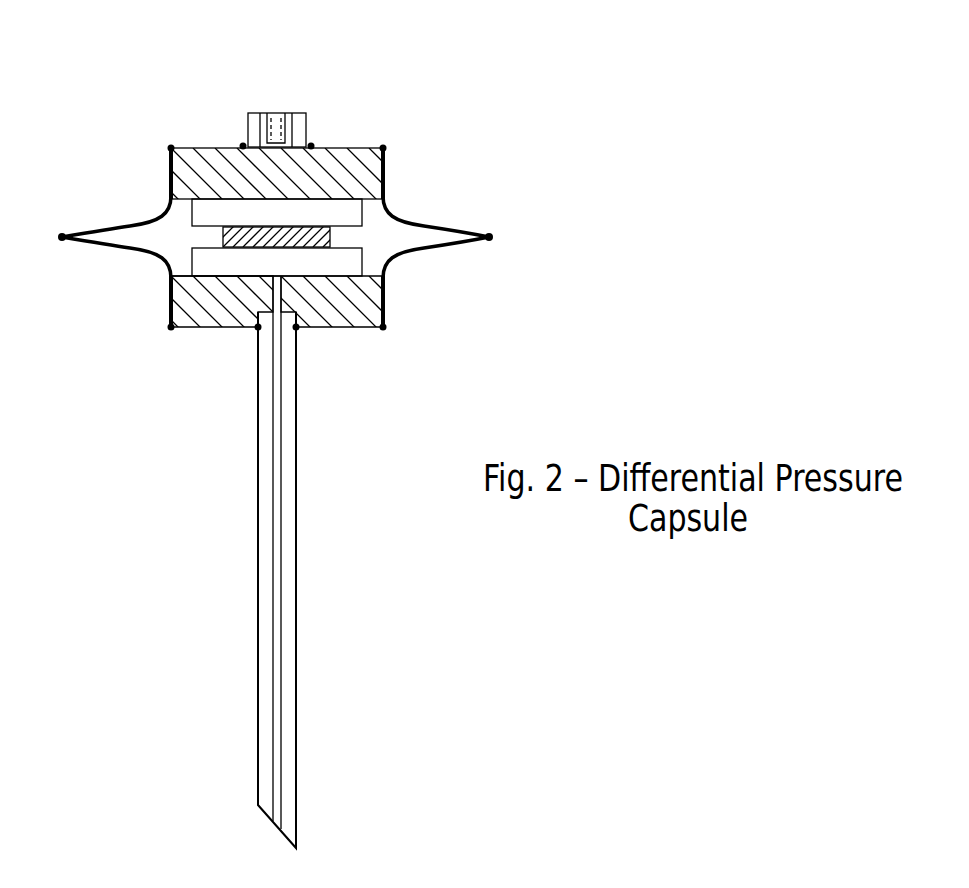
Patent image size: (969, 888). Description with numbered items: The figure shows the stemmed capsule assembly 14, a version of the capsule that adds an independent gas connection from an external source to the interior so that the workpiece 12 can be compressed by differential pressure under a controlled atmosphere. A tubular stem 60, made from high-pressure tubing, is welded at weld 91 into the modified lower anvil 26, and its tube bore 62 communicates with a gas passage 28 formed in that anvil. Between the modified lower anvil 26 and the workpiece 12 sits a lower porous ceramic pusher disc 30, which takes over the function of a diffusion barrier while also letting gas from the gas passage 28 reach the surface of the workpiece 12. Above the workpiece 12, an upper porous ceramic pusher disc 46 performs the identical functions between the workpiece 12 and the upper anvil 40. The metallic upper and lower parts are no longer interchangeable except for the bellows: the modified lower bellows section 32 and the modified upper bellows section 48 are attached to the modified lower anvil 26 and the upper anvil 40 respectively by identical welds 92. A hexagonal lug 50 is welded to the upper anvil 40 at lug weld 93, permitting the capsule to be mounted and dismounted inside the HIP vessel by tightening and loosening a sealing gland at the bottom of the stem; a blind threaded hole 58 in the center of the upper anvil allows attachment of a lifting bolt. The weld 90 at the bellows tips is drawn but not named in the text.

The stemmed capsule assembly 14 is at (138, 196).
The workpiece 12 is at (307, 240).
The modified lower anvil 26 is at (345, 312).
The gas passage 28 is at (283, 285).
The lower porous ceramic pusher disc 30 is at (337, 263).
The modified lower bellows section 32 is at (437, 253).
The upper anvil 40 is at (320, 177).
The upper porous ceramic pusher disc 46 is at (340, 208).
The modified upper bellows section 48 is at (415, 213).
The hexagonal lug 50 is at (252, 113).
The blind threaded hole 58 is at (275, 125).
The tubular stem 60 is at (285, 522).
The tube bore 62 is at (275, 597).
The diaphragm rim weld 90 is at (58, 247).
The weld 91 is at (256, 332).
The welds 92 is at (178, 143).
The lug weld 93 is at (238, 143).